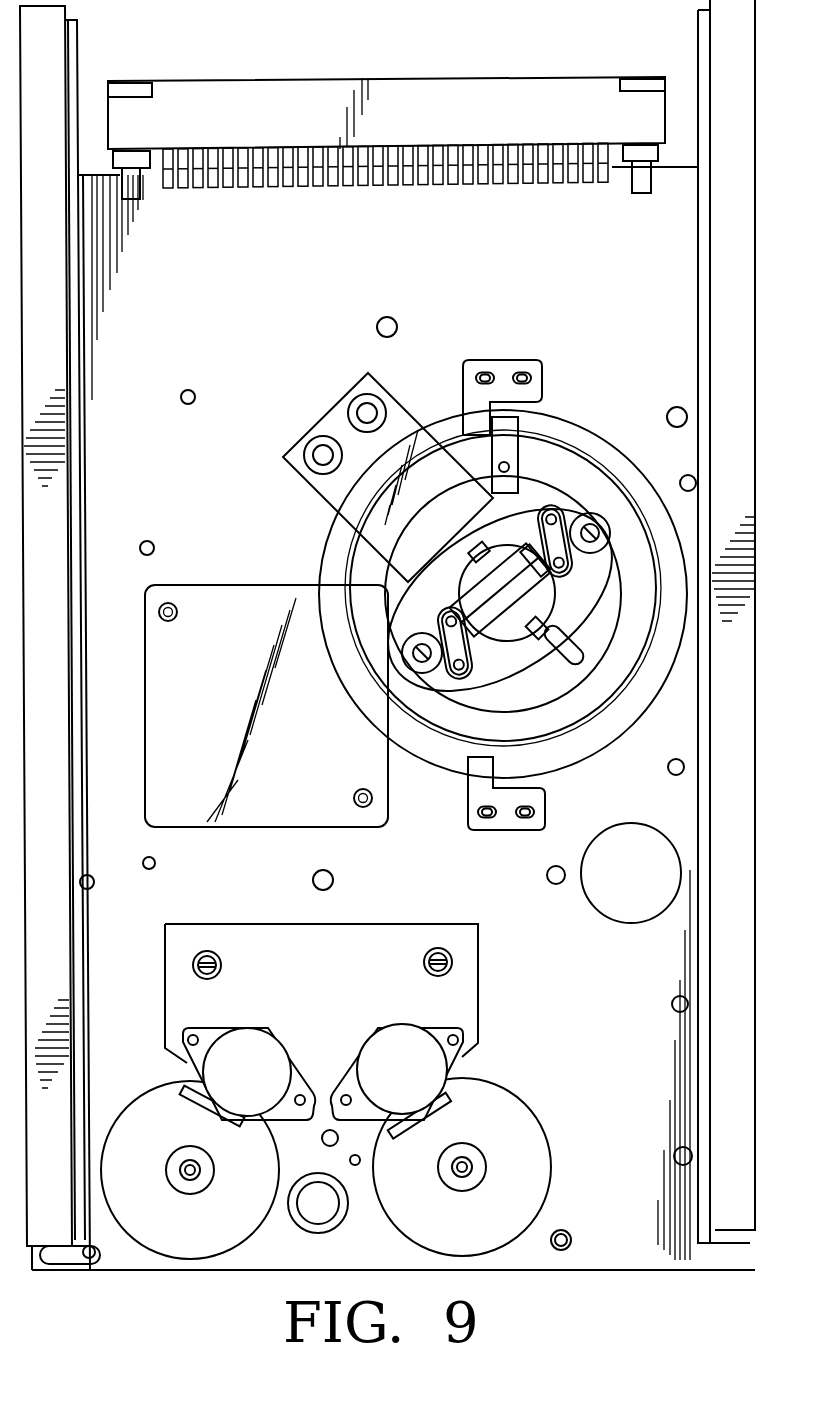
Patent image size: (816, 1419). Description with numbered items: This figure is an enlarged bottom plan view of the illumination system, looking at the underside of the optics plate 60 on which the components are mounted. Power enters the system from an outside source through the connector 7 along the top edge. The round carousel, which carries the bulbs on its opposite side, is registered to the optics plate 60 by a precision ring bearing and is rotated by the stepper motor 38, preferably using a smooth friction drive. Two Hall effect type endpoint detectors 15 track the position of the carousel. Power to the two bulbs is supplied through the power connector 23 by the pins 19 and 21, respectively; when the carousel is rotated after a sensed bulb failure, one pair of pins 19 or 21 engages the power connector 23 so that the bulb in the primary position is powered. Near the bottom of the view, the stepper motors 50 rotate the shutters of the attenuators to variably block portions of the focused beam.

The connector 7 is at (549, 77).
The optics plate 60 is at (221, 297).
The power connector 23 is at (328, 413).
The Hall effect type endpoint detectors 15 is at (523, 360).
The stepper motor 38 is at (252, 585).
The pins 19 is at (482, 550).
The pins 21 is at (576, 662).
The stepper motors 50 is at (264, 1028).